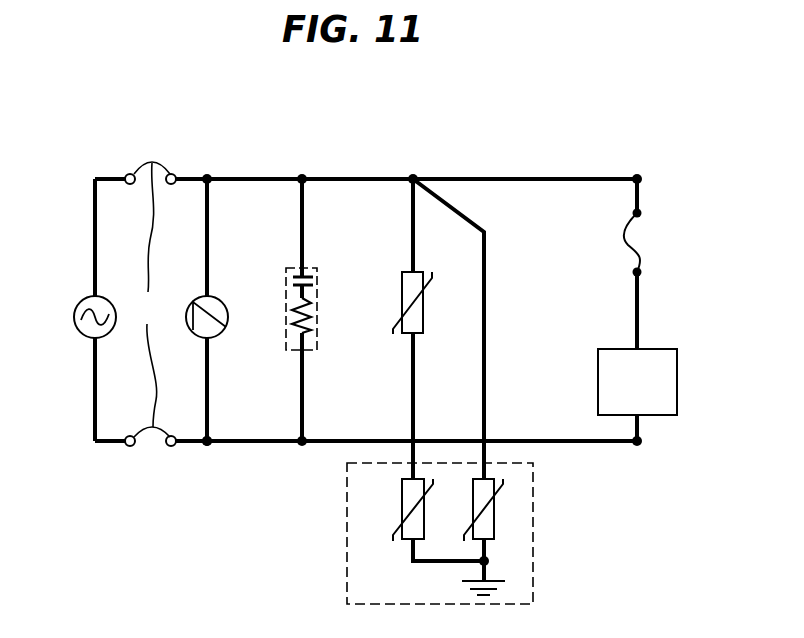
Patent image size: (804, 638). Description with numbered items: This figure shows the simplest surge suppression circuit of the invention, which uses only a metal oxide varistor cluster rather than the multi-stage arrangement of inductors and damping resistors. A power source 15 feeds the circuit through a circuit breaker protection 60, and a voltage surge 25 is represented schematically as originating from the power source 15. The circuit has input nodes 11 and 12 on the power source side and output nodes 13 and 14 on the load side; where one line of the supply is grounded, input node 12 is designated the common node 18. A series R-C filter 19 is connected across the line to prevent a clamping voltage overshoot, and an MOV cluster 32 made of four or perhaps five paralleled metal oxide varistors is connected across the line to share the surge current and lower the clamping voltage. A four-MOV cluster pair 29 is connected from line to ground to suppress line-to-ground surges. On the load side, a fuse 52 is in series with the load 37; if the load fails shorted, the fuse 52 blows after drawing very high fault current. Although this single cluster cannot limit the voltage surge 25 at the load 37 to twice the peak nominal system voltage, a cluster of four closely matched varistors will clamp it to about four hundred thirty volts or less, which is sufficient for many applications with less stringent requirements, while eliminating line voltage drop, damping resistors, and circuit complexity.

The input node 11 is at (207, 178).
The input node 12 is at (207, 443).
The common node 18 is at (207, 441).
The output node 13 is at (647, 176).
The output node 14 is at (640, 445).
The power source 15 is at (82, 298).
The series R-C filter 19 is at (317, 276).
The voltage surge 25 is at (197, 299).
The four-MOV cluster pair 29 is at (534, 542).
The MOV cluster 32 is at (401, 303).
The load 37 is at (677, 379).
The fuse 52 is at (641, 255).
The circuit breaker protection 60 is at (147, 295).